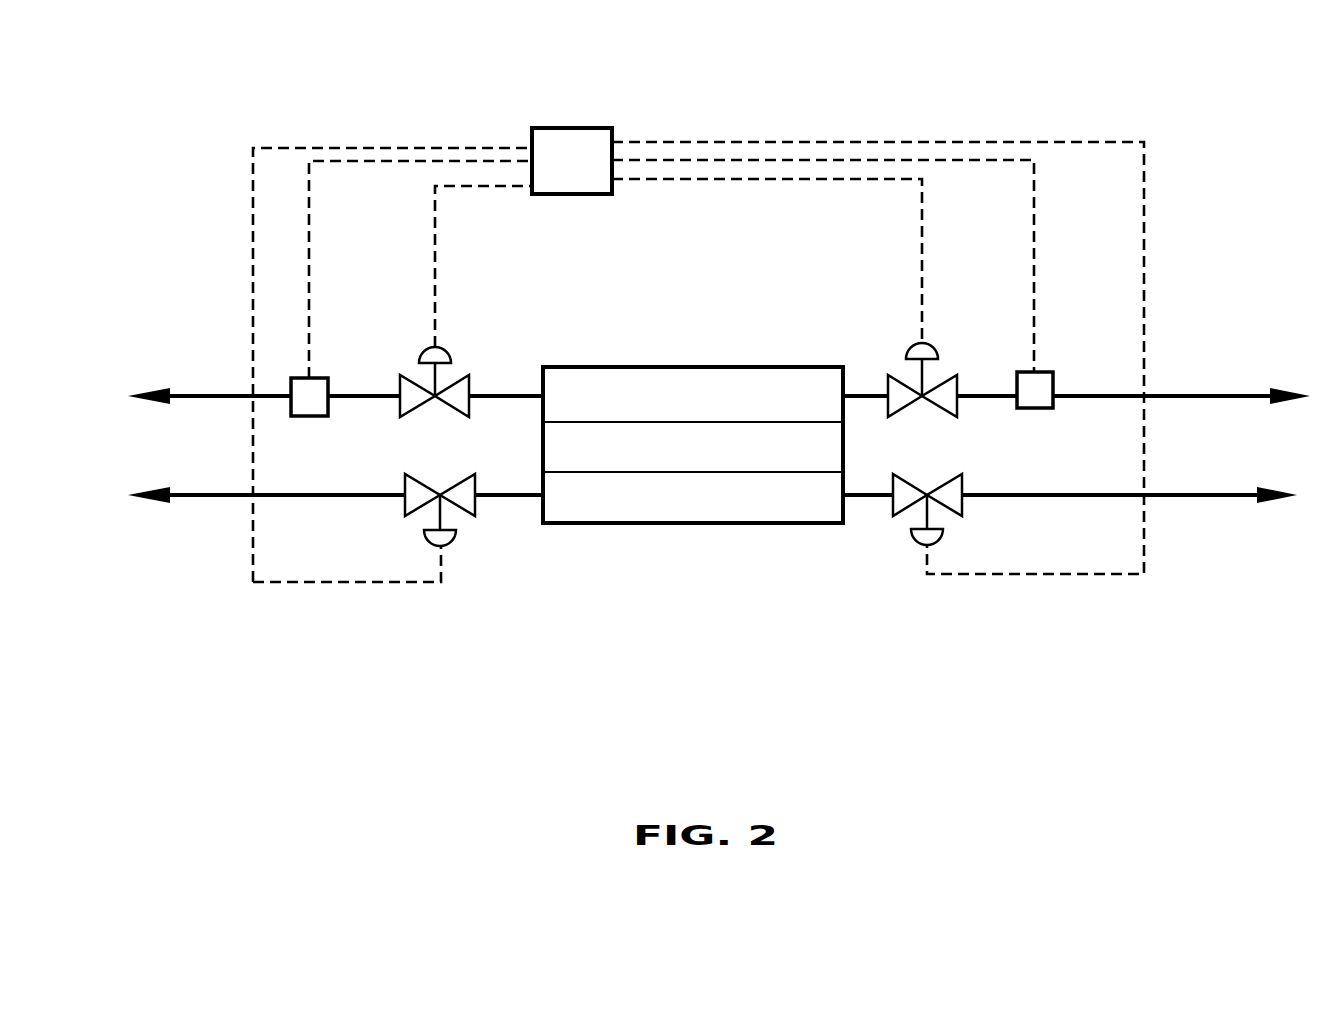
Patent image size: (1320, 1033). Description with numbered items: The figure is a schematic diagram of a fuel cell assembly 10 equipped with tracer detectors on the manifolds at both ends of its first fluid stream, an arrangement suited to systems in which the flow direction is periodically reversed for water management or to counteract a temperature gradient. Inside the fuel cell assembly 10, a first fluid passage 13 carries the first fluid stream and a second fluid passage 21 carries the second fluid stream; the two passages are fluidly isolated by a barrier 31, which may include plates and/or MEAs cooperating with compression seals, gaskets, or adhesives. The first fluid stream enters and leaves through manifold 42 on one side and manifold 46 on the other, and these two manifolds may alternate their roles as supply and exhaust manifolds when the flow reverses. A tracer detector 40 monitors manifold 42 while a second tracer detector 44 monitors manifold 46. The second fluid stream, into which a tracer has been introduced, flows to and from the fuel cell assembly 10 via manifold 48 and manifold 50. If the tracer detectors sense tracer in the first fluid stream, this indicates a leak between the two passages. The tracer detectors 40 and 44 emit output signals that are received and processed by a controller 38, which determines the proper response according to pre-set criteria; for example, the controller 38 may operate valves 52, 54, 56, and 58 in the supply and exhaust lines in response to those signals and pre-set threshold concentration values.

The fuel cell assembly 10 is at (636, 304).
The first fluid passage 13 is at (725, 387).
The second fluid passage 21 is at (570, 505).
The barrier 31 is at (712, 443).
The controller 38 is at (560, 147).
The tracer detector 40 is at (315, 393).
The manifold 42 is at (227, 395).
The tracer detector 44 is at (1042, 390).
The manifold 46 is at (1200, 383).
The manifold 48 is at (235, 500).
The manifold 50 is at (1167, 497).
The valve 52 is at (462, 387).
The valve 54 is at (948, 387).
The valve 56 is at (463, 502).
The valve 58 is at (907, 498).